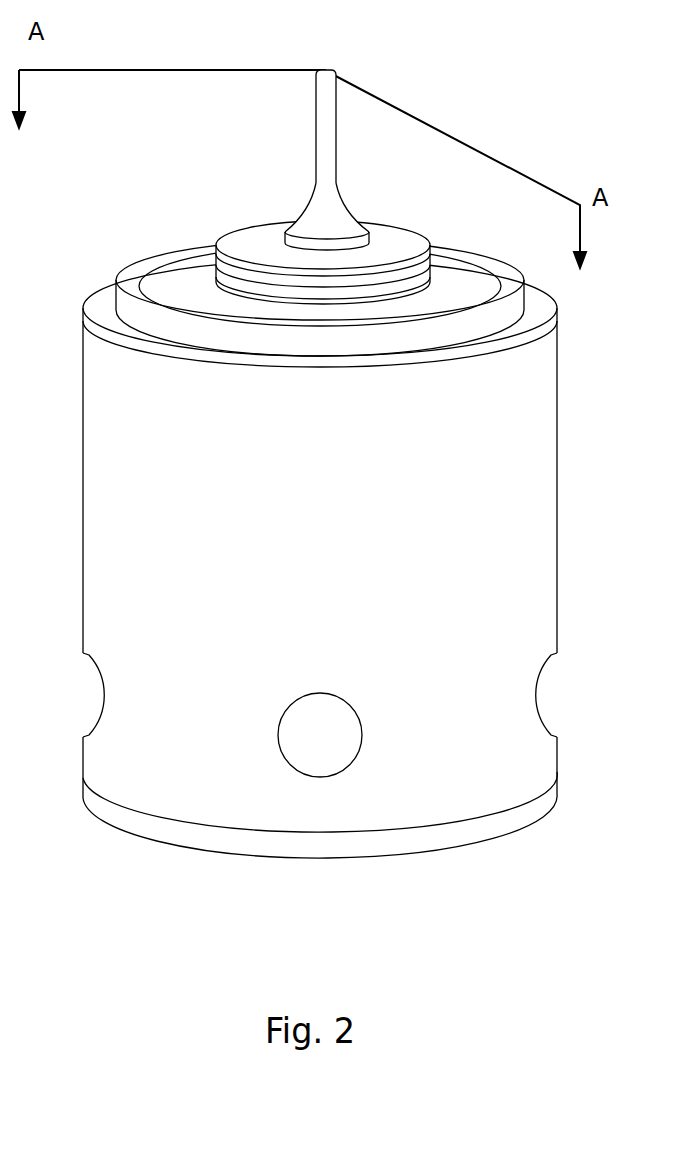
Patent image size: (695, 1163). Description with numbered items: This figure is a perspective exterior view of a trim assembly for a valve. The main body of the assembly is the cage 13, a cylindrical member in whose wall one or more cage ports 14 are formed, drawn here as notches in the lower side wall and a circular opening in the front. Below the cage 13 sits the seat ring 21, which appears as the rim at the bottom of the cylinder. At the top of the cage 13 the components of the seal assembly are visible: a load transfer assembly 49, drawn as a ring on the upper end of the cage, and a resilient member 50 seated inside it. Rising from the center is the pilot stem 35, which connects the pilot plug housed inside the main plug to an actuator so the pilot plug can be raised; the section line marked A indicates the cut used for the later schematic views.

The cage 13 is at (82, 455).
The cage port 14 is at (98, 673).
The seat ring 21 is at (558, 792).
The pilot stem 35 is at (315, 178).
The load transfer assembly 49 is at (455, 278).
The resilient member 50 is at (253, 237).